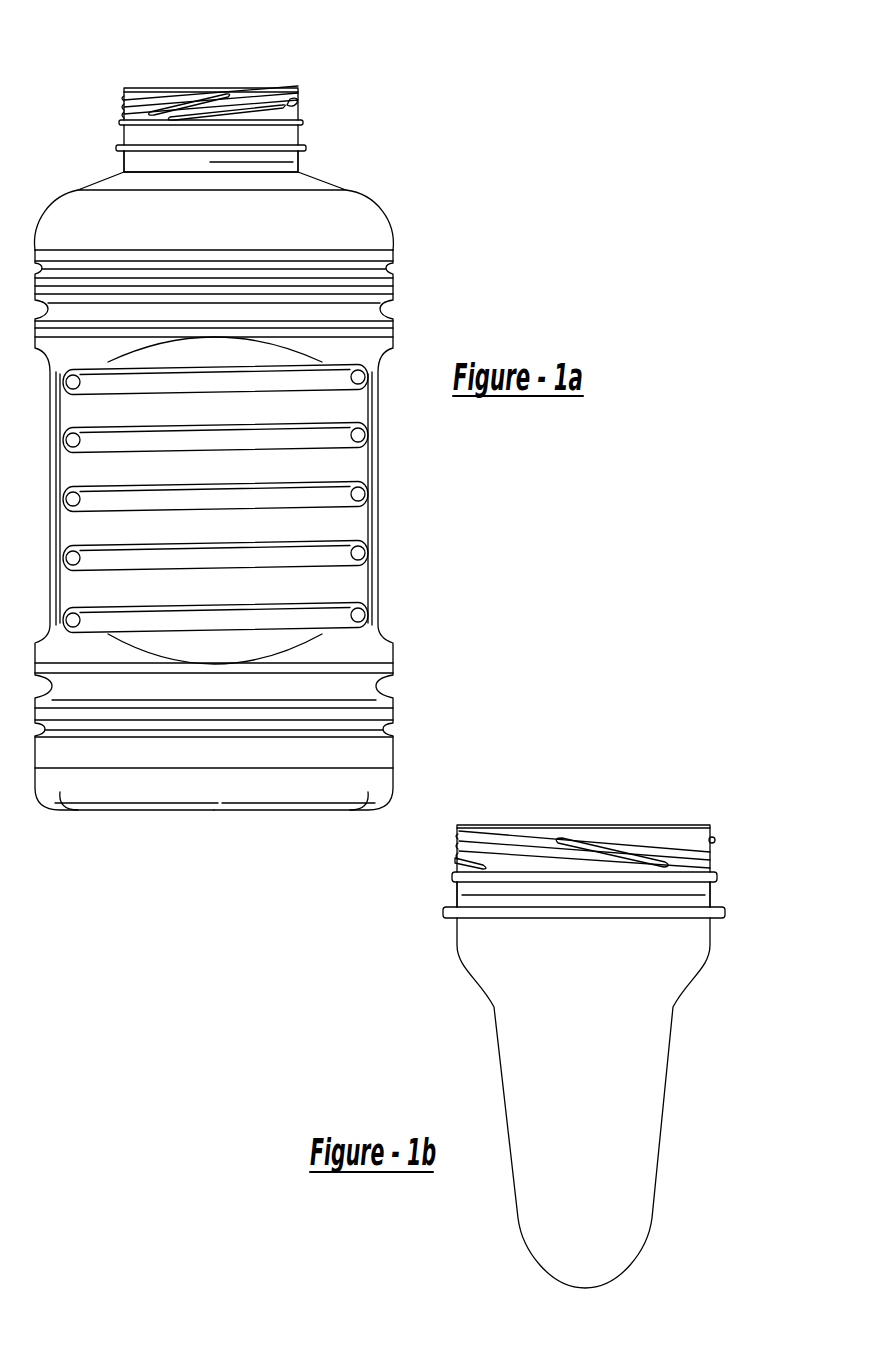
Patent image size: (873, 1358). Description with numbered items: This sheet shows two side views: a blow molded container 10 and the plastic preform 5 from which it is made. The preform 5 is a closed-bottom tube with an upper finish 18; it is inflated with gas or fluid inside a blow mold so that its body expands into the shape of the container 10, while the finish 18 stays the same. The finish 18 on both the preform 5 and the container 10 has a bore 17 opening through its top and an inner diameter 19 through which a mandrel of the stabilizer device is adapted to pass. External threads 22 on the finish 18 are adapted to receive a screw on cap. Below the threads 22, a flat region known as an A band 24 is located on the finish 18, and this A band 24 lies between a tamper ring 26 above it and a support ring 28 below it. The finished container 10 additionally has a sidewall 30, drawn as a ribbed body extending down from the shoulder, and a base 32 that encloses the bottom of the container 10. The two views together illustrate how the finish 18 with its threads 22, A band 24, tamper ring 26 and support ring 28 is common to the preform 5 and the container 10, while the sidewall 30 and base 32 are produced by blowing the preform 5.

In FIG. 1B, the preform 5 is at (670, 1068).
In FIG. 1A, the container 10 is at (383, 508).
In FIG. 1A, the bore 17 is at (242, 88).
In FIG. 1B, the bore 17 is at (587, 823).
In FIG. 1A, the finish 18 is at (308, 88).
In FIG. 1B, the finish 18 is at (712, 820).
In FIG. 1A, the inner diameter 19 is at (138, 88).
In FIG. 1B, the inner diameter 19 is at (468, 823).
In FIG. 1A, the threads 22 is at (303, 100).
In FIG. 1B, the threads 22 is at (717, 853).
In FIG. 1A, the A band 24 is at (303, 133).
In FIG. 1B, the A band 24 is at (717, 890).
In FIG. 1A, the tamper ring 26 is at (123, 125).
In FIG. 1B, the tamper ring 26 is at (452, 877).
In FIG. 1A, the support ring 28 is at (115, 147).
In FIG. 1B, the support ring 28 is at (447, 915).
In FIG. 1A, the sidewall 30 is at (382, 437).
In FIG. 1A, the base 32 is at (127, 810).